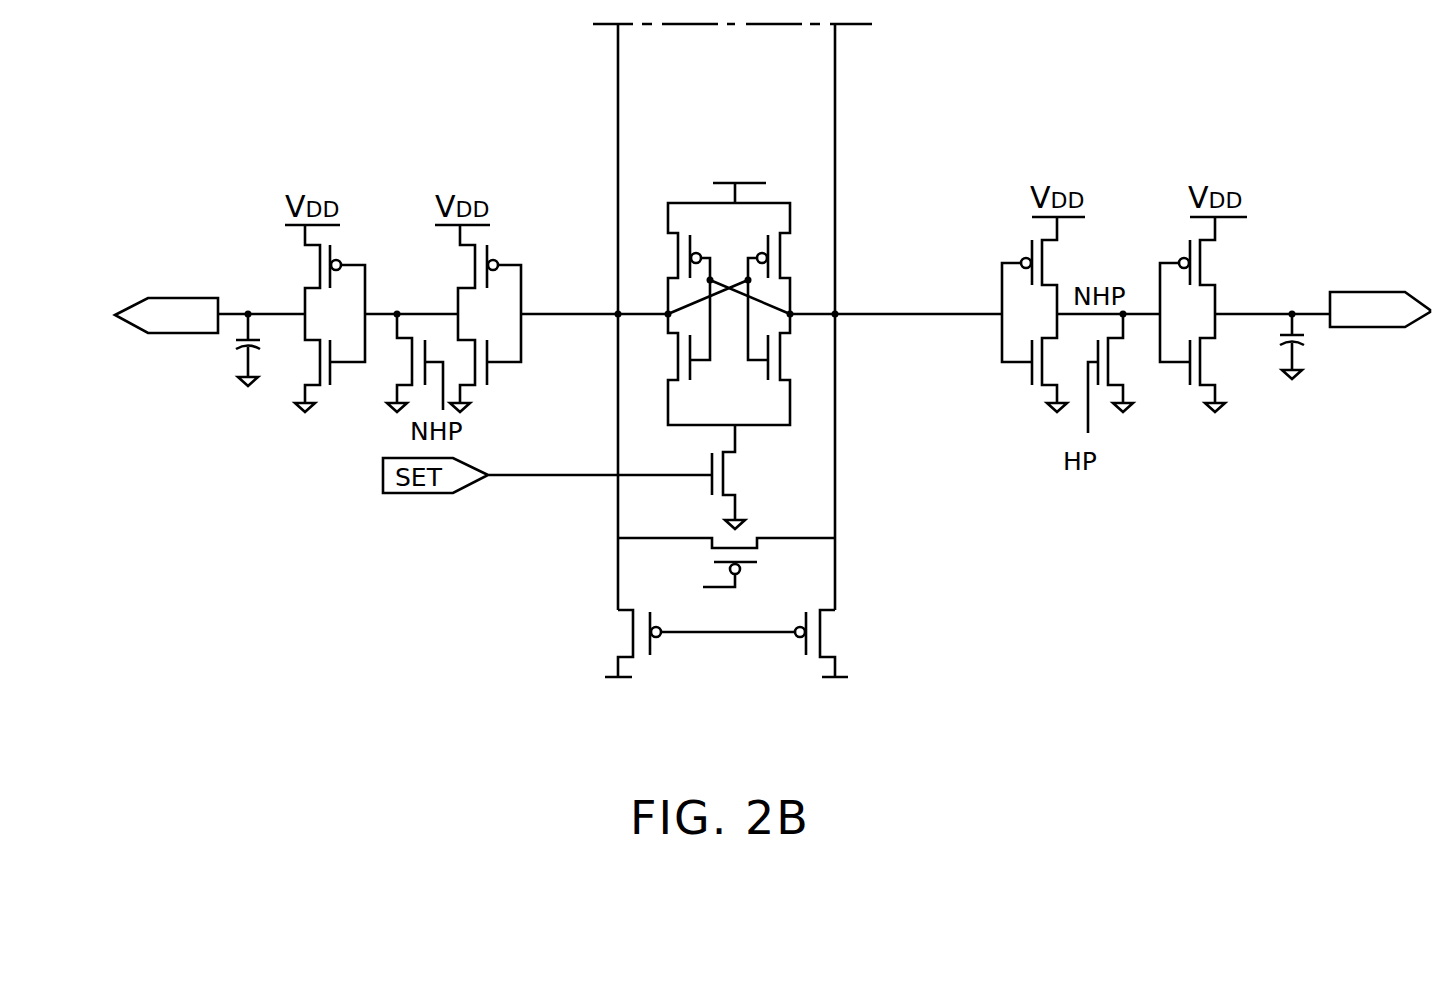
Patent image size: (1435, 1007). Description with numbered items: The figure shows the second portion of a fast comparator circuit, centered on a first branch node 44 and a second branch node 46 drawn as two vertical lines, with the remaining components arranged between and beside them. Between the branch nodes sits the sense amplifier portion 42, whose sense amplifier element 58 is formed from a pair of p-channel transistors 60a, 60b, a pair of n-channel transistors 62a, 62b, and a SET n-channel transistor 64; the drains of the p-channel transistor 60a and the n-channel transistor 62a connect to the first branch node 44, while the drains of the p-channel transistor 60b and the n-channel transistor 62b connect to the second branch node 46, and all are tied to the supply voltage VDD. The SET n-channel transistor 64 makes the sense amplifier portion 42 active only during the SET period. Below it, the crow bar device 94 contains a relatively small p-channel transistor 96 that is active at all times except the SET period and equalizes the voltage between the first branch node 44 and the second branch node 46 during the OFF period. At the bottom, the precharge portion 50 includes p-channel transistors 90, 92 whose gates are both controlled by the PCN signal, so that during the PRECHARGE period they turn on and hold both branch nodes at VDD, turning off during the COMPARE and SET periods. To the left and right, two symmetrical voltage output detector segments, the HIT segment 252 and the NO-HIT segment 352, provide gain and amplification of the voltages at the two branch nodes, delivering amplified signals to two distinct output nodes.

The sense amplifier portion 42 is at (768, 269).
The first branch node 44 is at (618, 124).
The second branch node 46 is at (835, 124).
The precharge portion 50 is at (794, 651).
The sense amplifier element 58 is at (766, 203).
The p-channel transistor 60a is at (666, 256).
The p-channel transistor 60b is at (783, 255).
The n-channel transistor 62a is at (678, 362).
The n-channel transistor 62b is at (780, 362).
The SET n-channel transistor 64 is at (723, 473).
The p-channel transistor 90 is at (650, 657).
The p-channel transistor 92 is at (822, 640).
The crow bar device 94 is at (781, 552).
The p-channel transistor 96 is at (757, 527).
The HIT segment 252 is at (258, 288).
The NO-HIT segment 352 is at (1255, 285).